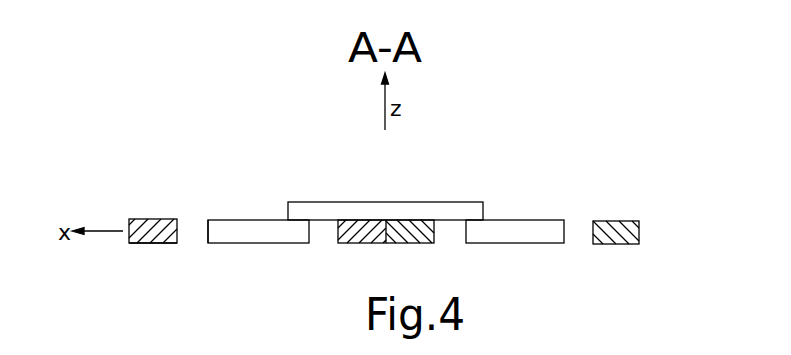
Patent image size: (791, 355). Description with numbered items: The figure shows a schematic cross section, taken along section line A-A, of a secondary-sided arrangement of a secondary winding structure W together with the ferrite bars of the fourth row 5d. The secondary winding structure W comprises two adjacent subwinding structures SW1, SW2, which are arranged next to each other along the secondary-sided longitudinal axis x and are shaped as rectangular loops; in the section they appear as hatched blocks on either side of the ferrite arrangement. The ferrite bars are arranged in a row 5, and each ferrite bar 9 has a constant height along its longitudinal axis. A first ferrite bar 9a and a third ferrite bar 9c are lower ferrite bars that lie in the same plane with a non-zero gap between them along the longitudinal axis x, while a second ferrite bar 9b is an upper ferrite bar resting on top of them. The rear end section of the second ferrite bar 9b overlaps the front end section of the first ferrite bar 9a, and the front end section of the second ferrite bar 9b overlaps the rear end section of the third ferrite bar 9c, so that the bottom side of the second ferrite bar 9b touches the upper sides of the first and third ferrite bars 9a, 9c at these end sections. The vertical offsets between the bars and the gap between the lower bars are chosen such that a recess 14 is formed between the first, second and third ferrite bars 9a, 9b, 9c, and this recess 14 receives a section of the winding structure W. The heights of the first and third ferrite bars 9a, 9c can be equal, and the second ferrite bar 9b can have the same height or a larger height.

The row 5 is at (184, 198).
The fourth row 5d is at (207, 230).
The ferrite bar 9 is at (386, 190).
The first ferrite bar 9a is at (529, 220).
The second ferrite bar 9b is at (380, 200).
The third ferrite bar 9c is at (257, 218).
The recess 14 is at (325, 233).
The first subwinding structure SW1 is at (618, 220).
The second subwinding structure SW2 is at (143, 218).
The secondary winding structure W is at (148, 244).